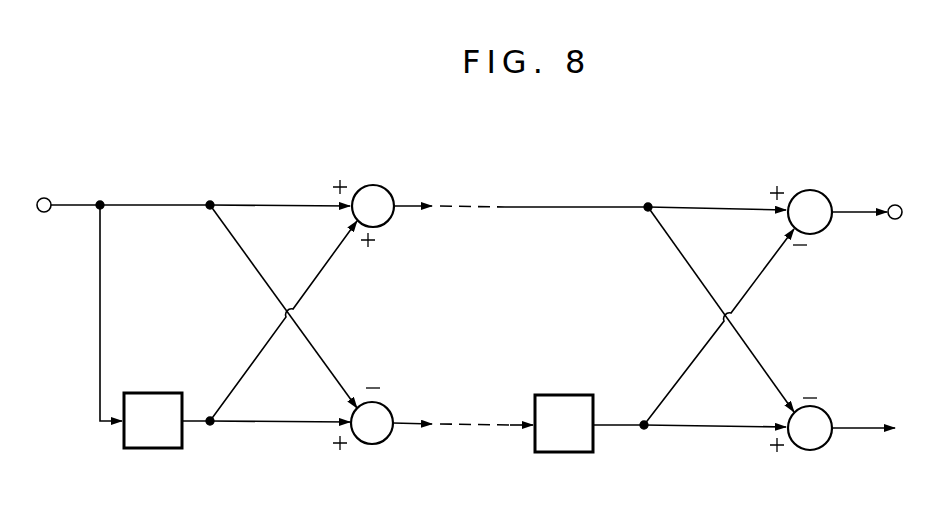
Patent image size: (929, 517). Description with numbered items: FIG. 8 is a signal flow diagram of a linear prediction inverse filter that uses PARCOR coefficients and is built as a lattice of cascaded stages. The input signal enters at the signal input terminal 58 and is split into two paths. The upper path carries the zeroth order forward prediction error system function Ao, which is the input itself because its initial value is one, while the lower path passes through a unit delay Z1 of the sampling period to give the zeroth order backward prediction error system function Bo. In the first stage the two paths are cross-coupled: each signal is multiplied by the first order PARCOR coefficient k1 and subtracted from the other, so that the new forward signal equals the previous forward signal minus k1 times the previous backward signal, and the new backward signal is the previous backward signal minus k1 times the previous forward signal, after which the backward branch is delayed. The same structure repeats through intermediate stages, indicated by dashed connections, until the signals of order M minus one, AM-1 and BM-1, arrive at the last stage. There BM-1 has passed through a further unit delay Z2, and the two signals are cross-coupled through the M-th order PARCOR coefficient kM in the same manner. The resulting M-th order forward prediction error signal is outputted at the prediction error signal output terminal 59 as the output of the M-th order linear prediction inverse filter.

The signal input terminal 58 is at (46, 198).
The prediction error signal output terminal 59 is at (898, 205).
The zeroth order forward prediction error system function Ao is at (202, 194).
The zeroth order backward prediction error system function Bo is at (201, 409).
The (M-1)th order forward prediction error system function AM-1 is at (625, 196).
The (M-1)th order backward prediction error system function BM-1 is at (622, 412).
The first order PARCOR coefficient k1 is at (283, 313).
The M-th order PARCOR coefficient kM is at (719, 316).
The unit delay Z1 is at (153, 420).
The unit delay Z2 is at (564, 423).